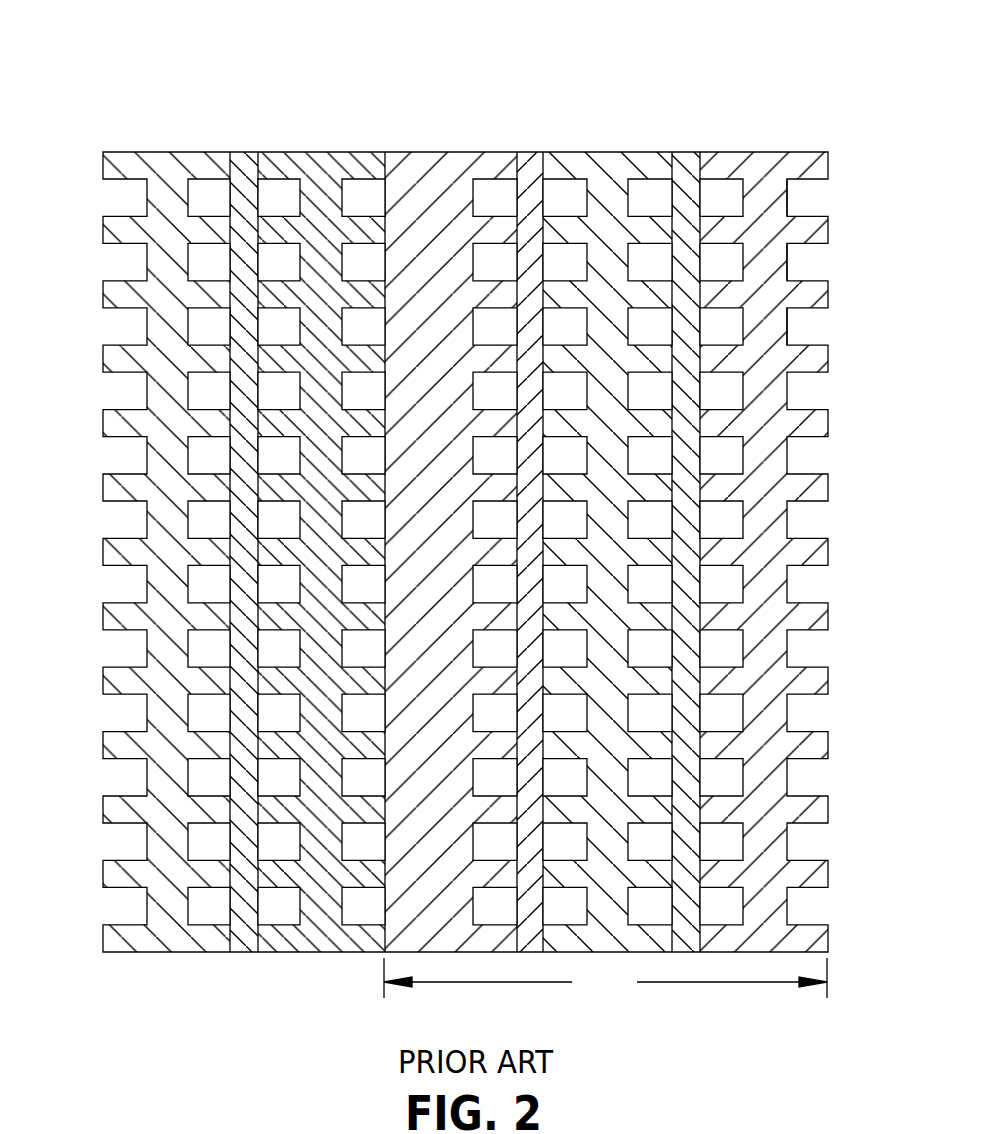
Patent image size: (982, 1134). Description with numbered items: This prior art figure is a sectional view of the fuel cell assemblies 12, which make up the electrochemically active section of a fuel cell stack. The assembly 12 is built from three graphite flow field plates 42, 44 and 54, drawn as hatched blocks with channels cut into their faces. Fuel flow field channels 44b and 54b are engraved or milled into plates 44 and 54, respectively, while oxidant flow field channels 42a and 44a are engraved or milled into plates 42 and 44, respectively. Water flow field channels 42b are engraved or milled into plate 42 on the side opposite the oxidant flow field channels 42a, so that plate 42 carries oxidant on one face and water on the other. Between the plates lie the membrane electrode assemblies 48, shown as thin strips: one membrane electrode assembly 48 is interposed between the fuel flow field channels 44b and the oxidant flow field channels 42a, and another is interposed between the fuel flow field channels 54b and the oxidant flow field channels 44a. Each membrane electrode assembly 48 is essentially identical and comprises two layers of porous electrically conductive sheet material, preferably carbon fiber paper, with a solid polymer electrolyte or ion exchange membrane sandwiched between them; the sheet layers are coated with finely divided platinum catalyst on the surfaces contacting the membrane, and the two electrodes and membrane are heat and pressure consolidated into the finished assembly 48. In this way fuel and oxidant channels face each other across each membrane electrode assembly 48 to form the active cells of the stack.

The fuel cell assemblies 12 is at (605, 978).
The graphite flow field plate 42 is at (770, 192).
The oxidant flow field channels 42a is at (282, 193).
The water flow field channels 42b is at (368, 193).
The graphite flow field plate 44 is at (610, 185).
The oxidant flow field channels 44a is at (123, 200).
The fuel flow field channels 44b is at (207, 193).
The membrane electrode assemblies 48 is at (243, 172).
The graphite flow field plate 54 is at (418, 175).
The fuel flow field channels 54b is at (495, 193).